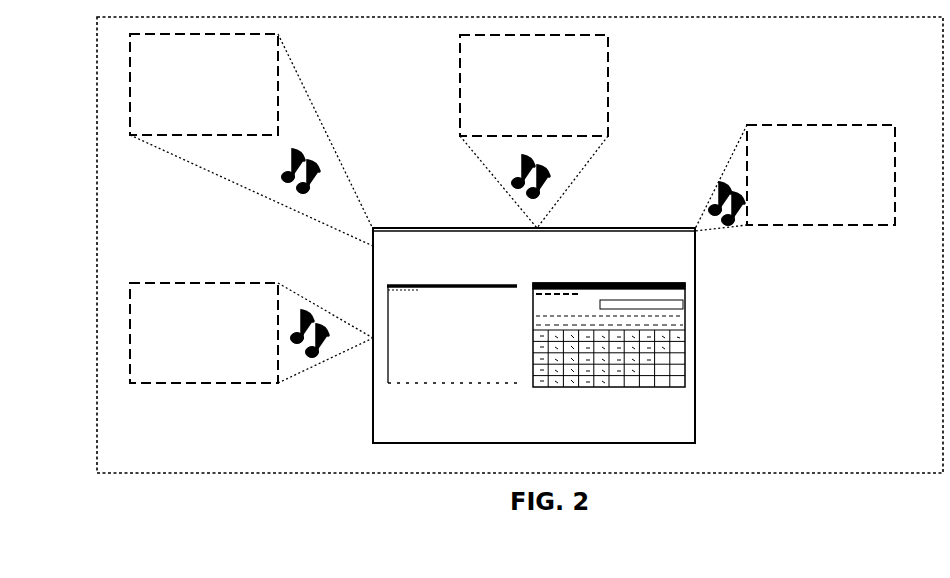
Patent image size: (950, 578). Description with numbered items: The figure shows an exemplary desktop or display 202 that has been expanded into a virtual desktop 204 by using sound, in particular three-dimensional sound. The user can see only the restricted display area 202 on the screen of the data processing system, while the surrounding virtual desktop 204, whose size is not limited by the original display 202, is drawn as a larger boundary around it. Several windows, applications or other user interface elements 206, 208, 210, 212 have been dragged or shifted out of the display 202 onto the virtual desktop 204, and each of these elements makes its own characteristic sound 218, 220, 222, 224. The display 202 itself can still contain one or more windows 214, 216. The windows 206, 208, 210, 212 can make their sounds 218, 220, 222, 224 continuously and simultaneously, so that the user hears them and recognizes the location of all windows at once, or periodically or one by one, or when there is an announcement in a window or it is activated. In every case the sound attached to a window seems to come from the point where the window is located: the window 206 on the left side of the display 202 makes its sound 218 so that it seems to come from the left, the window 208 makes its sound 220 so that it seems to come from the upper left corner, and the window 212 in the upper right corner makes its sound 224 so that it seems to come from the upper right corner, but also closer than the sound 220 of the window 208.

The display 202 is at (698, 370).
The virtual desktop 204 is at (800, 473).
The user interface element 206 is at (190, 283).
The user interface element 208 is at (282, 37).
The user interface element 210 is at (610, 73).
The user interface element 212 is at (815, 125).
The window 214 is at (458, 283).
The window 216 is at (608, 283).
The sound 218 is at (315, 355).
The sound 220 is at (283, 178).
The sound 222 is at (510, 181).
The sound 224 is at (735, 225).